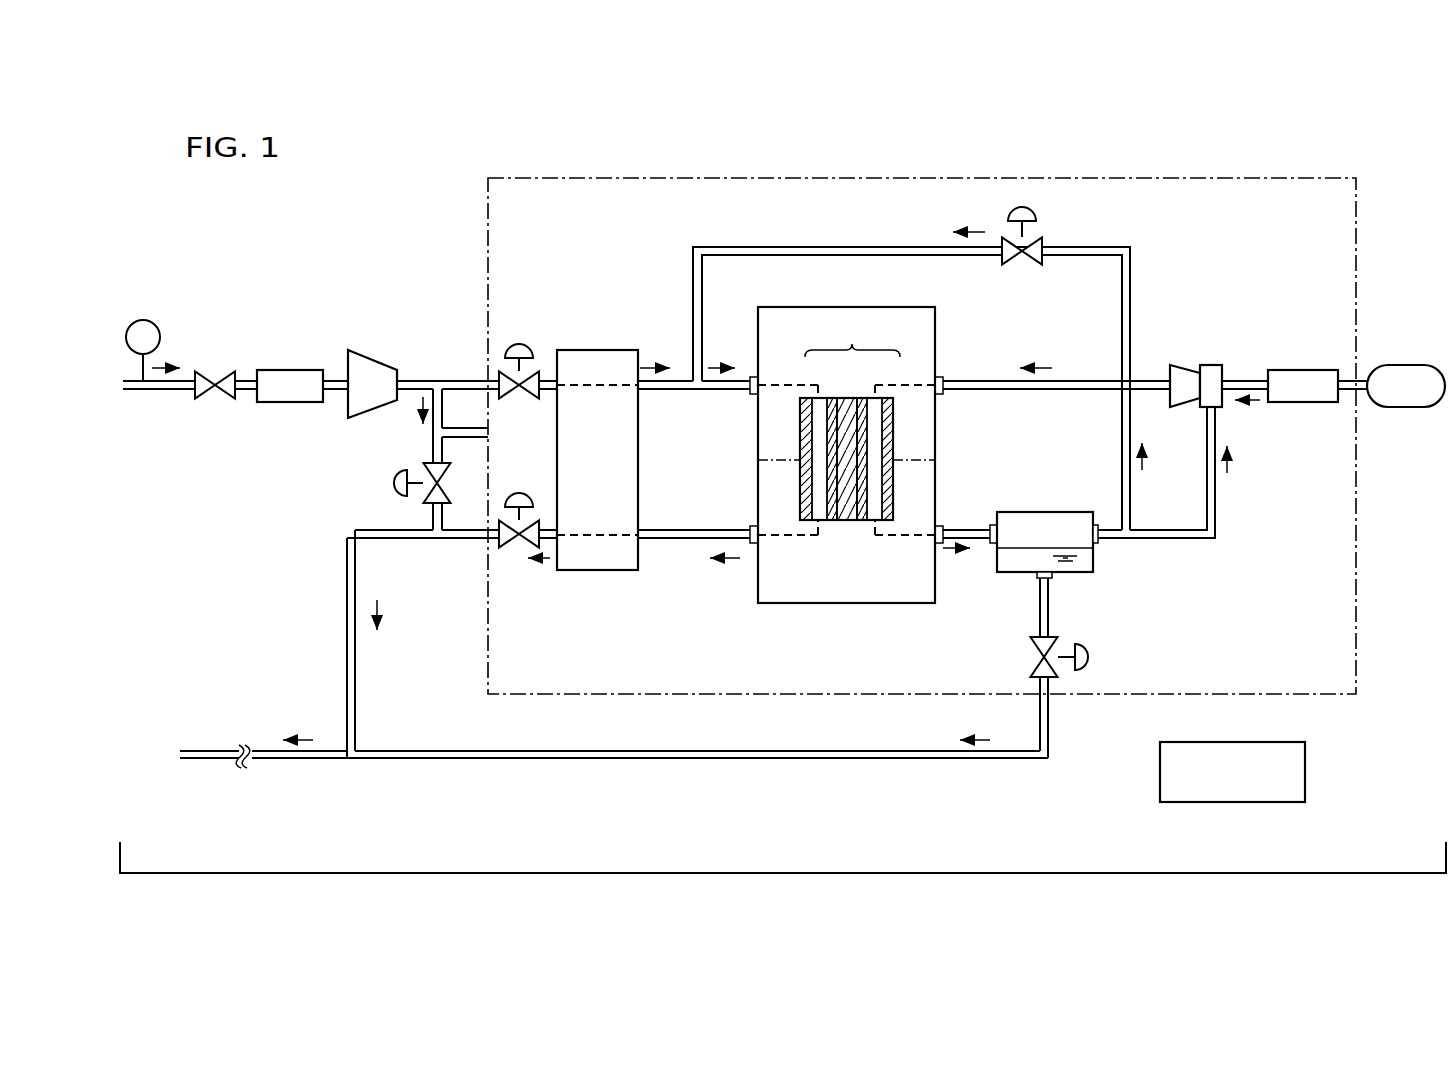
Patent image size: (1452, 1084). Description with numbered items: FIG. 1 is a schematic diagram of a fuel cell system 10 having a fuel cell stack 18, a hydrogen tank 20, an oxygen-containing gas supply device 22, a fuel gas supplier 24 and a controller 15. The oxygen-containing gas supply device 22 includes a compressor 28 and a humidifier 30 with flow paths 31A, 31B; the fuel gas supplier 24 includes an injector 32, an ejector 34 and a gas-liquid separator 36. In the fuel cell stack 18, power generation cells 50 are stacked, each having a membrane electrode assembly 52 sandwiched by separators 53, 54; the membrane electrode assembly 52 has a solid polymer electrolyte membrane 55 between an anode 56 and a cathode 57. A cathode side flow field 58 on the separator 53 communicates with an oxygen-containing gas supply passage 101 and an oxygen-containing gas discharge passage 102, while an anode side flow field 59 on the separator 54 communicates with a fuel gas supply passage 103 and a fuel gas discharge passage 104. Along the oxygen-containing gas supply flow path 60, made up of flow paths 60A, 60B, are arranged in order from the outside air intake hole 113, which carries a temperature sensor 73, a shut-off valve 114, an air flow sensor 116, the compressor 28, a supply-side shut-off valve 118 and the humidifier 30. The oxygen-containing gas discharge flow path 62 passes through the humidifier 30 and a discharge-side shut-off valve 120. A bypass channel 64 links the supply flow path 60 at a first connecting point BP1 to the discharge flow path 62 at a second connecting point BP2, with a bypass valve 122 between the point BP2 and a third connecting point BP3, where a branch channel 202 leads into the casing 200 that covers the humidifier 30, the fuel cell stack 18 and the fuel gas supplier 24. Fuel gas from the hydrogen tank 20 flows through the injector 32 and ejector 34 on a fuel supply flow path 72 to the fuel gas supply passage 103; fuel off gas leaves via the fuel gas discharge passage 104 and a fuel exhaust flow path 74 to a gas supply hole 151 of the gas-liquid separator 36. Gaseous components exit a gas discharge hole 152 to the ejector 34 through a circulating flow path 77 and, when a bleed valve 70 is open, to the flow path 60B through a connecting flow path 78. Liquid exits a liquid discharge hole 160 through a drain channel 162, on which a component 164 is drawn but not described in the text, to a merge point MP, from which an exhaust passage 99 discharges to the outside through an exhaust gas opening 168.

The fuel cell system 10 is at (338, 218).
The controller 15 is at (1305, 769).
The fuel cell stack 18 is at (836, 607).
The hydrogen tank 20 is at (1393, 365).
The oxygen-containing gas supply device 22 is at (262, 256).
The fuel gas supplier 24 is at (1272, 282).
The compressor 28 is at (349, 358).
The humidifier 30 is at (578, 349).
The flow path 31A is at (573, 387).
The flow path 31B is at (573, 533).
The injector 32 is at (1302, 370).
The ejector 34 is at (1182, 365).
The gas-liquid separator 36 is at (1065, 511).
The power generation cell 50 is at (797, 368).
The membrane electrode assembly 52 is at (850, 414).
The separator 53 is at (805, 462).
The separator 54 is at (888, 447).
The solid polymer electrolyte membrane 55 is at (846, 398).
The anode 56 is at (833, 398).
The cathode 57 is at (861, 398).
The cathode side flow field 58 is at (817, 510).
The anode side flow field 59 is at (873, 510).
The oxygen-containing gas supply flow path 60 is at (424, 378).
The oxygen-containing gas supply flow path 60A is at (417, 391).
The oxygen-containing gas supply flow path 60B is at (708, 392).
The oxygen-containing gas discharge flow path 62 is at (458, 543).
The bypass channel 64 is at (443, 522).
The bleed valve 70 is at (1035, 213).
The fuel supply flow path 72 is at (1067, 382).
The temperature sensor 73 is at (143, 320).
The fuel exhaust flow path 74 is at (975, 528).
The circulating flow path 77 is at (1217, 490).
The connecting flow path 78 is at (1093, 256).
The exhaust passage 99 is at (337, 751).
The oxygen-containing gas supply passage 101 is at (779, 388).
The oxygen-containing gas discharge passage 102 is at (776, 532).
The fuel gas supply passage 103 is at (908, 385).
The fuel gas discharge passage 104 is at (912, 538).
The outside air intake hole 113 is at (148, 391).
The shut-off valve 114 is at (223, 394).
The air flow sensor 116 is at (284, 403).
The supply-side shut-off valve 118 is at (517, 339).
The discharge-side shut-off valve 120 is at (507, 544).
The bypass valve 122 is at (392, 478).
The gas supply hole 151 is at (992, 525).
The gas discharge hole 152 is at (1097, 547).
The liquid discharge hole 160 is at (1035, 575).
The drain channel 162 is at (1053, 613).
The drain valve 164 is at (1092, 657).
The exhaust gas opening 168 is at (192, 751).
The casing 200 is at (1076, 166).
The branch channel 202 is at (448, 412).
The first connecting point BP1 is at (459, 396).
The second connecting point BP2 is at (428, 522).
The third connecting point BP3 is at (450, 442).
The merge point MP is at (362, 743).